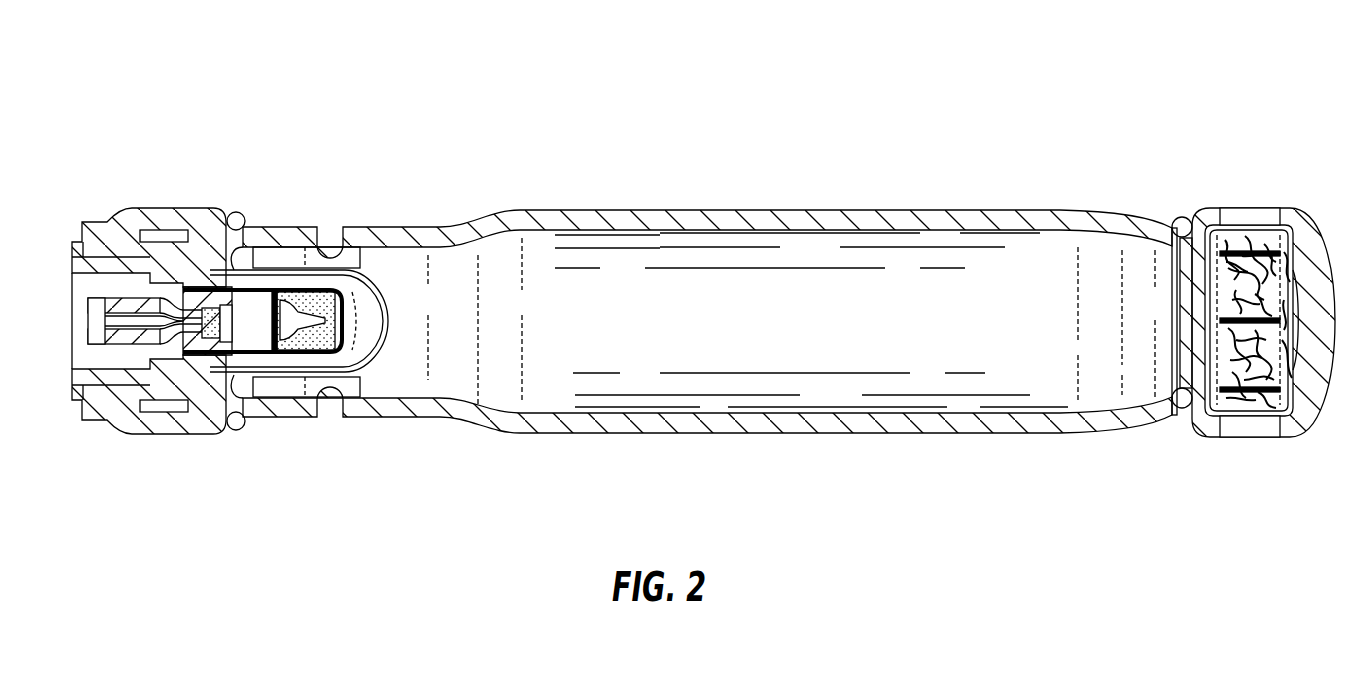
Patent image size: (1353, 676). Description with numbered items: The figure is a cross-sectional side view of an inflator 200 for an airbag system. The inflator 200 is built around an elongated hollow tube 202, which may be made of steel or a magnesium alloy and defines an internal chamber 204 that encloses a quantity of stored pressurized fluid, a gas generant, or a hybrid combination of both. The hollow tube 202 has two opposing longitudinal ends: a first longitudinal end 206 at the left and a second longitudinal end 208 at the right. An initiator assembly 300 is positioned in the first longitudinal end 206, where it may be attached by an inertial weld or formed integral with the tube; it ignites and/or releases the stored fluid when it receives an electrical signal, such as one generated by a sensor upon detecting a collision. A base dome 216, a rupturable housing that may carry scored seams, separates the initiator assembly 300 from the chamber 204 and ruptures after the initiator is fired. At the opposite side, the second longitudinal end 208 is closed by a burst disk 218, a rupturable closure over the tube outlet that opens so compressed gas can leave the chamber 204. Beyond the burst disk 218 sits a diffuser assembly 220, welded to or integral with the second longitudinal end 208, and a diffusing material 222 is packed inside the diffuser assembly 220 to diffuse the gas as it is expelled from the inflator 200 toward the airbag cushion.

The inflator 200 is at (698, 108).
The hollow tube 202 is at (878, 210).
The chamber 204 is at (933, 370).
The first longitudinal end 206 is at (212, 196).
The second longitudinal end 208 is at (1187, 188).
The base dome 216 is at (398, 320).
The burst disk 218 is at (1180, 352).
The diffuser assembly 220 is at (1248, 458).
The diffusing material 222 is at (1252, 245).
The initiator assembly 300 is at (243, 420).